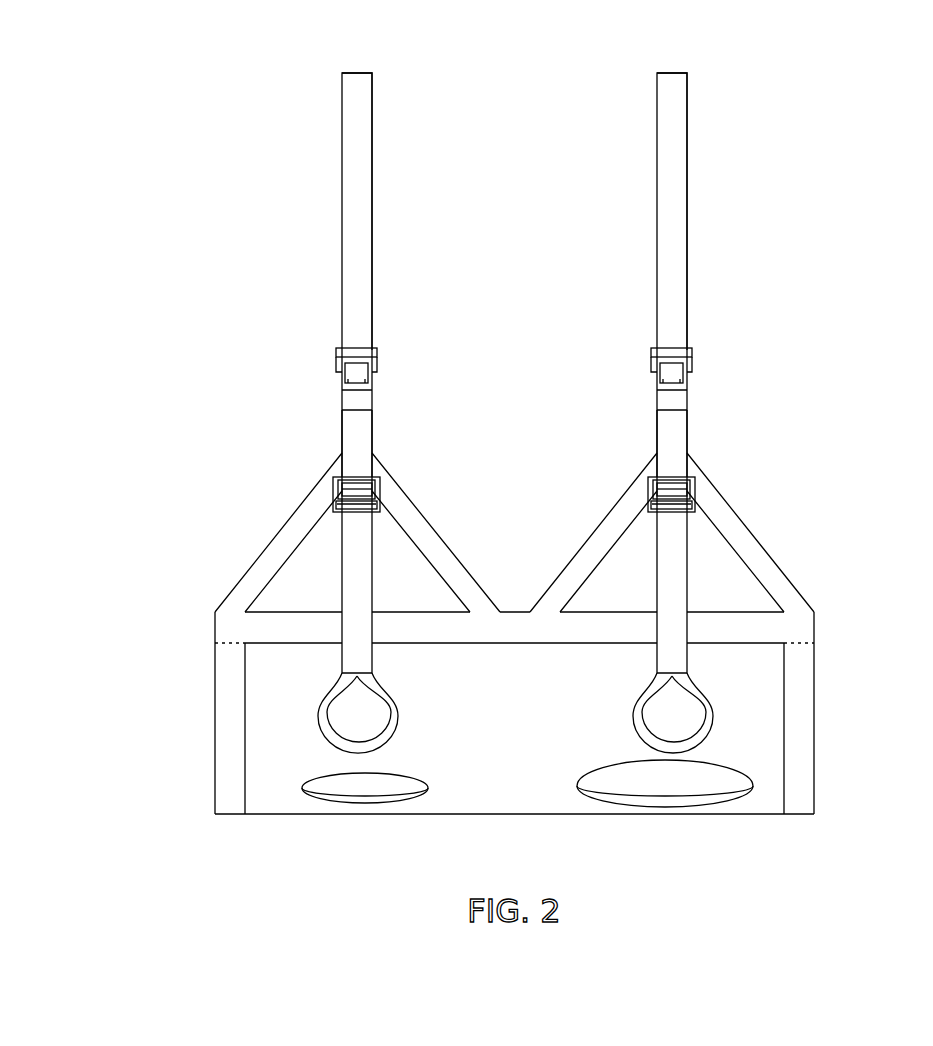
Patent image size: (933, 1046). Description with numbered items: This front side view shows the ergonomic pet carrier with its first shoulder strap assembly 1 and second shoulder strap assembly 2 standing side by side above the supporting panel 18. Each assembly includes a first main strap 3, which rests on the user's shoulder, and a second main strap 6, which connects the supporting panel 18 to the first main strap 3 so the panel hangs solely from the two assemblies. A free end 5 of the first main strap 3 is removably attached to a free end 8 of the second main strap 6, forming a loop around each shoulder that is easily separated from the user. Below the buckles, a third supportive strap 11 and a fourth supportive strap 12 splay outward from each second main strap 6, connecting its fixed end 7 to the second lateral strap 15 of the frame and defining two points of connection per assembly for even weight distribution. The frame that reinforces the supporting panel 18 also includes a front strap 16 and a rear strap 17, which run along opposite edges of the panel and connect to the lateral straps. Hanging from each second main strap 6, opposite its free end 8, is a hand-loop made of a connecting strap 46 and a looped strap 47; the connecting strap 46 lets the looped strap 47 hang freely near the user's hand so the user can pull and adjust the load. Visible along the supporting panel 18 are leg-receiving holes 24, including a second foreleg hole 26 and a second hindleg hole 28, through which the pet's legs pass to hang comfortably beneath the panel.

The first shoulder strap assembly 1 is at (395, 139).
The second shoulder strap assembly 2 is at (713, 147).
The first main strap 3 is at (357, 80).
The free end 5 is at (332, 344).
The second main strap 6 is at (355, 446).
The fixed end 7 is at (203, 607).
The free end 8 is at (360, 466).
The third supportive strap 11 is at (298, 526).
The fourth supportive strap 12 is at (447, 557).
The second lateral strap 15 is at (813, 625).
The front strap 16 is at (227, 773).
The rear strap 17 is at (805, 772).
The supporting panel 18 is at (770, 813).
The plurality of leg-receiving holes 24 is at (372, 803).
The second foreleg hole 26 is at (302, 792).
The second hindleg hole 28 is at (577, 792).
The connecting strap 46 is at (370, 627).
The looped strap 47 is at (326, 720).